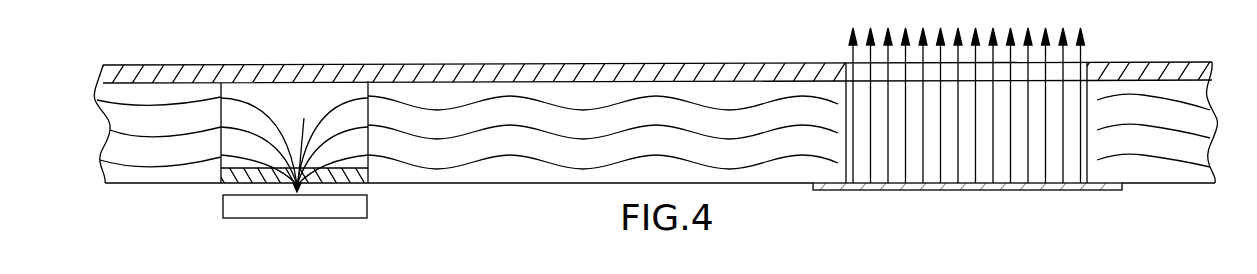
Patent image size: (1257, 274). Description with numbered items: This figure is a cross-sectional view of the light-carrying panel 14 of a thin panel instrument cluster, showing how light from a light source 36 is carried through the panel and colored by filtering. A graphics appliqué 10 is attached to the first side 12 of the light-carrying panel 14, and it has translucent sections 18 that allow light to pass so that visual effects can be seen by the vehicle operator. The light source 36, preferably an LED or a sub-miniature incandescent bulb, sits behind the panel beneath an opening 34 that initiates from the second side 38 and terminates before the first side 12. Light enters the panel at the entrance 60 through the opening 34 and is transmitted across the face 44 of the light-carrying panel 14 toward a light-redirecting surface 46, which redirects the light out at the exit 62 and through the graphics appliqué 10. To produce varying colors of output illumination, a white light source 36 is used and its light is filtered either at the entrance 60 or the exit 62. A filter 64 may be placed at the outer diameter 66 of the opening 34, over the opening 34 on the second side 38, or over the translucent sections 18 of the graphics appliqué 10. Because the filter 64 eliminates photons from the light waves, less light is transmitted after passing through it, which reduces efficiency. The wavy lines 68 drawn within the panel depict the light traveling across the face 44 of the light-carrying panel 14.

The graphics appliqué 10 is at (145, 72).
The first side 12 is at (570, 80).
The light-carrying panel 14 is at (120, 116).
The translucent sections 18 is at (899, 70).
The opening 34 is at (297, 105).
The light source 36 is at (320, 208).
The second side 38 is at (528, 183).
The face 44 is at (603, 99).
The light-redirecting surface 46 is at (1032, 192).
The entrance 60 is at (220, 188).
The exit 62 is at (1035, 72).
The filter 64 is at (353, 173).
The outer diameter 66 is at (216, 115).
The flow stream line 68 is at (706, 108).